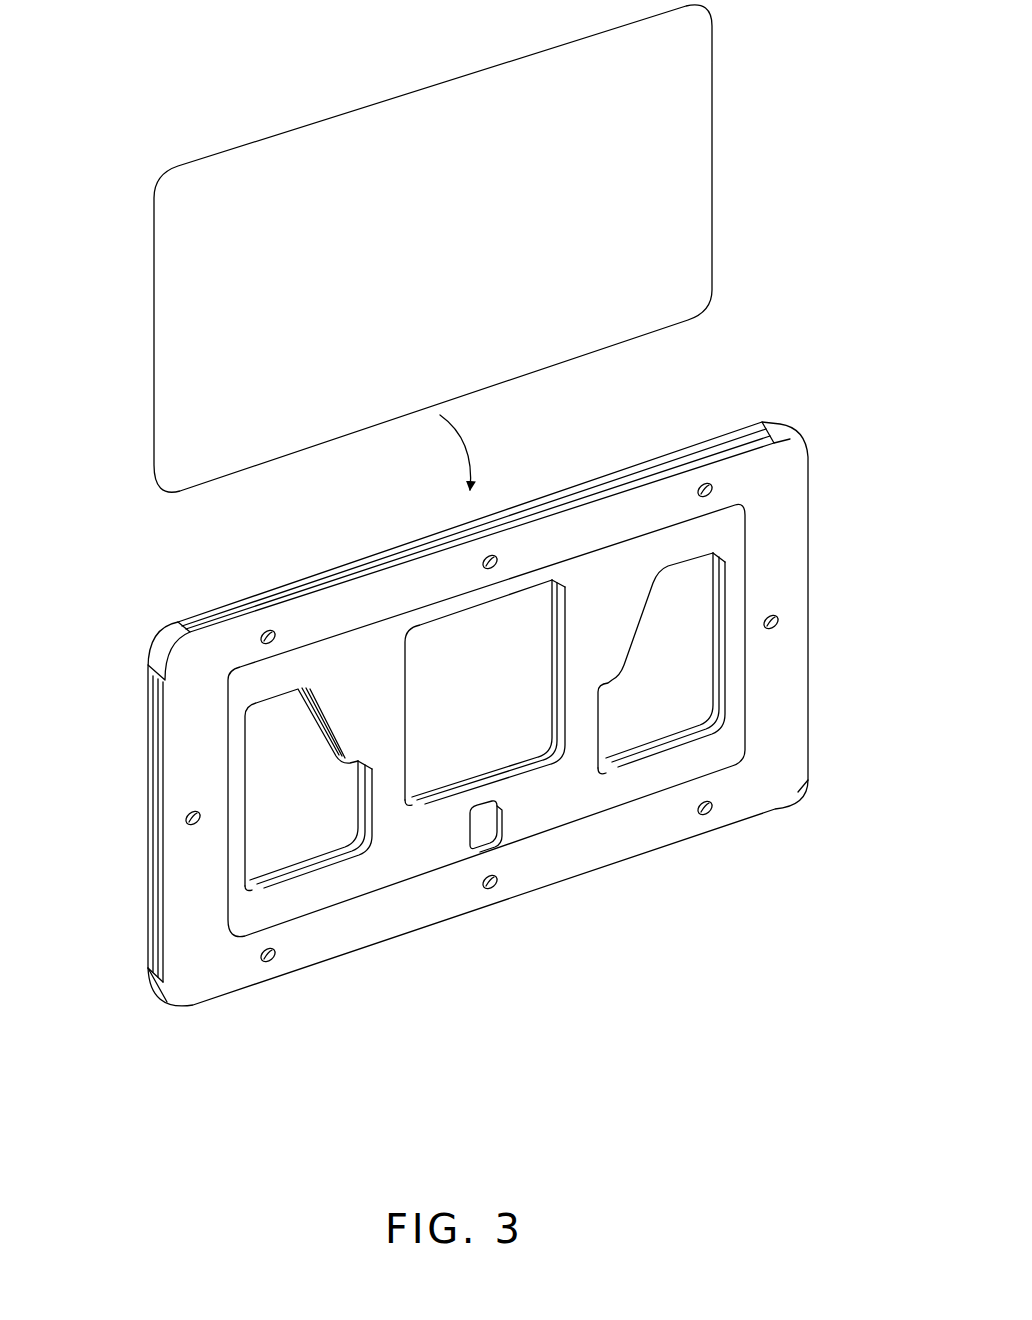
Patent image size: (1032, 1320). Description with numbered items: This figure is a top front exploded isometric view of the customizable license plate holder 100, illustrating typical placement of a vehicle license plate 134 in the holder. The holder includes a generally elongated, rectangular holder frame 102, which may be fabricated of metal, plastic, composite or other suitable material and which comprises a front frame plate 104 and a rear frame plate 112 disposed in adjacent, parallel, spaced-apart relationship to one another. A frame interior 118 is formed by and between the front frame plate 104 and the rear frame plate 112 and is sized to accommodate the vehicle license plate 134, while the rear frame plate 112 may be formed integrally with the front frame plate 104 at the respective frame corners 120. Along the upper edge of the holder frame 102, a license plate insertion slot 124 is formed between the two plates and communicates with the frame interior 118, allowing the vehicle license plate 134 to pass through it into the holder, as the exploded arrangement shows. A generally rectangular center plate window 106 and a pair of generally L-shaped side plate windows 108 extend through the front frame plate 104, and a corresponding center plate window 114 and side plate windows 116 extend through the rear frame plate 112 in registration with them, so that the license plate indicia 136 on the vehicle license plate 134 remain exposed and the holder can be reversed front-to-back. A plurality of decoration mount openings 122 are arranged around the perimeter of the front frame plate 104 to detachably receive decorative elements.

The customizable license plate holder 100 is at (191, 576).
The holder frame 102 is at (577, 889).
The front frame plate 104 is at (780, 533).
The center plate window 106 is at (408, 730).
The side plate window 108 is at (248, 808).
The rear frame plate 112 is at (590, 482).
The center plate window 114 is at (548, 640).
The side plate window 116 is at (358, 800).
The frame interior 118 is at (154, 757).
The frame corner 120 is at (170, 640).
The decoration mount opening 122 is at (785, 620).
The license plate insertion slot 124 is at (681, 452).
The vehicle license plate 134 is at (152, 272).
The license plate indicia 136 is at (505, 160).